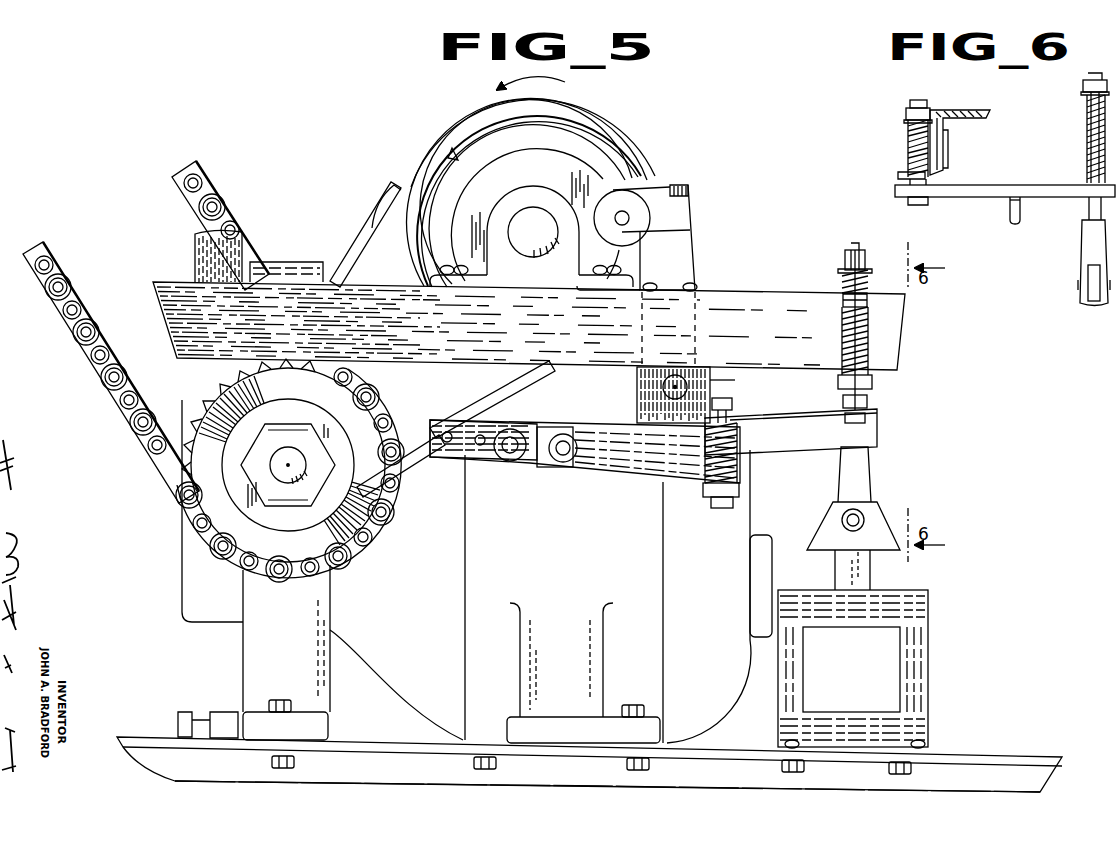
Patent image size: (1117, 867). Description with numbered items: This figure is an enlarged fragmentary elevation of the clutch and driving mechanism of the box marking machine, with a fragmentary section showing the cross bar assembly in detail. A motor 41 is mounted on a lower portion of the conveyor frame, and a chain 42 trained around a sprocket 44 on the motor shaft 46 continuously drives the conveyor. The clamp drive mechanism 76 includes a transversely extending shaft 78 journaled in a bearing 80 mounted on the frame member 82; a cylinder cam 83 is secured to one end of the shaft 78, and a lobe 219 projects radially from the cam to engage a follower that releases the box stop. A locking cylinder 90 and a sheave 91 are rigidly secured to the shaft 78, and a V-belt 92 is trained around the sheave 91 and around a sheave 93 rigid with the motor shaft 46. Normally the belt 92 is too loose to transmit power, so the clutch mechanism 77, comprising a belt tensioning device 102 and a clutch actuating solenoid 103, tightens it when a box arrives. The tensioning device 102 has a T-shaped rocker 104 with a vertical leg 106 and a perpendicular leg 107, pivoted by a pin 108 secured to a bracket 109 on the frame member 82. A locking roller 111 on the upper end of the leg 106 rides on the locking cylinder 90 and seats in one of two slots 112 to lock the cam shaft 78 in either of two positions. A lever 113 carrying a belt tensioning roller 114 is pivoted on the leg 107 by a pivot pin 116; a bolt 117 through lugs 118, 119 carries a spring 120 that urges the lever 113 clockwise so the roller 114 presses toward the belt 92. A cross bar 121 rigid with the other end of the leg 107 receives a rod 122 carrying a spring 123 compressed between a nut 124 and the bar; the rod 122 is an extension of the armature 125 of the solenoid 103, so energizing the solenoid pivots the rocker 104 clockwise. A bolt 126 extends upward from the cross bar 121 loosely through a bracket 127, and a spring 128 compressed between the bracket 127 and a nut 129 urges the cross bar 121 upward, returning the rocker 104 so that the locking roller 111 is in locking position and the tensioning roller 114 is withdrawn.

In FIG. 5, the motor 41 is at (618, 596).
In FIG. 5, the chain 42 is at (205, 190).
In FIG. 5, the sprocket 44 is at (195, 416).
In FIG. 5, the motor shaft 46 is at (290, 472).
In FIG. 5, the clamp drive mechanism 76 is at (650, 136).
In FIG. 5, the clutch mechanism 77 is at (702, 246).
In FIG. 6, the clutch mechanism 77 is at (1046, 208).
In FIG. 5, the shaft 78 is at (533, 230).
In FIG. 5, the bearing 80 is at (548, 274).
In FIG. 5, the frame member 82 is at (529, 326).
In FIG. 6, the frame member 82 is at (975, 112).
In FIG. 5, the cylinder cam 83 is at (437, 143).
In FIG. 5, the locking cylinder 90 is at (598, 145).
In FIG. 5, the sheave 91 is at (575, 120).
In FIG. 5, the V-belt 92 is at (368, 236).
In FIG. 5, the sheave 93 is at (365, 488).
In FIG. 5, the belt tensioning device 102 is at (572, 470).
In FIG. 5, the clutch actuating solenoid 103 is at (890, 657).
In FIG. 5, the rocker 104 is at (878, 425).
In FIG. 6, the rocker 104 is at (1012, 224).
In FIG. 5, the vertical leg 106 is at (672, 264).
In FIG. 5, the leg 107 is at (775, 424).
In FIG. 6, the leg 107 is at (1010, 212).
In FIG. 5, the pin 108 is at (676, 386).
In FIG. 5, the bracket 109 is at (735, 380).
In FIG. 5, the locking roller 111 is at (655, 205).
In FIG. 5, the slots 112 is at (456, 152).
In FIG. 5, the lever 113 is at (462, 428).
In FIG. 5, the belt tensioning roller 114 is at (520, 425).
In FIG. 5, the pivot pin 116 is at (572, 430).
In FIG. 5, the bolt 117 is at (718, 508).
In FIG. 5, the lug 118 is at (730, 416).
In FIG. 5, the lug 119 is at (740, 492).
In FIG. 5, the spring 120 is at (738, 455).
In FIG. 5, the cross bar 121 is at (870, 402).
In FIG. 6, the cross bar 121 is at (990, 190).
In FIG. 5, the rod 122 is at (855, 245).
In FIG. 6, the rod 122 is at (1088, 145).
In FIG. 5, the spring 123 is at (842, 276).
In FIG. 6, the spring 123 is at (1087, 112).
In FIG. 5, the nut 124 is at (848, 256).
In FIG. 6, the nut 124 is at (1085, 90).
In FIG. 5, the armature 125 is at (850, 576).
In FIG. 6, the armature 125 is at (1090, 308).
In FIG. 5, the bolt 126 is at (846, 418).
In FIG. 6, the bolt 126 is at (930, 90).
In FIG. 5, the bracket 127 is at (874, 383).
In FIG. 6, the bracket 127 is at (900, 175).
In FIG. 5, the spring 128 is at (870, 330).
In FIG. 6, the spring 128 is at (908, 138).
In FIG. 5, the nut 129 is at (870, 308).
In FIG. 6, the nut 129 is at (906, 118).
In FIG. 5, the lobe 219 is at (380, 200).